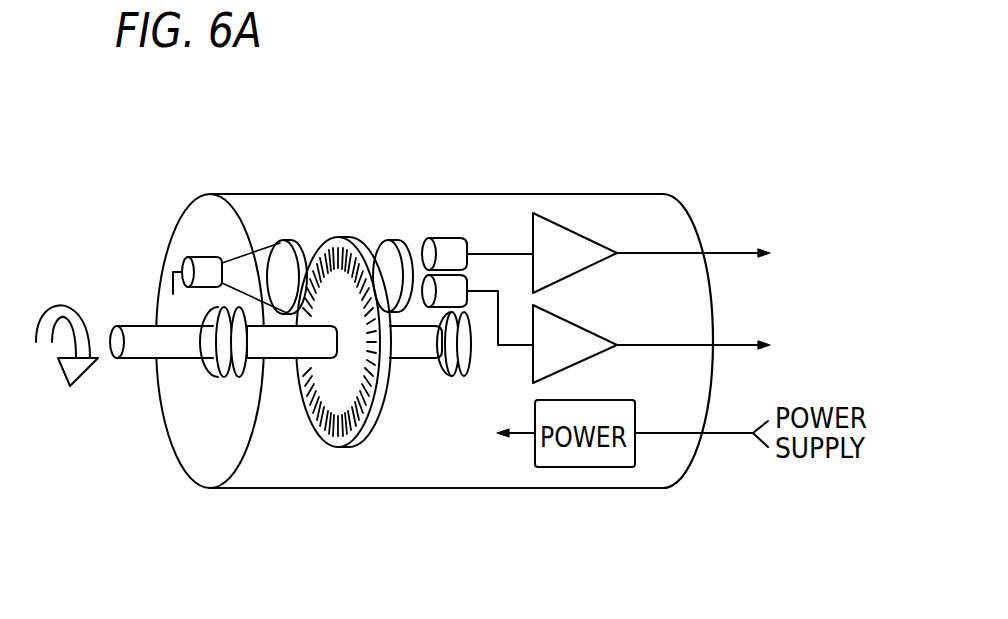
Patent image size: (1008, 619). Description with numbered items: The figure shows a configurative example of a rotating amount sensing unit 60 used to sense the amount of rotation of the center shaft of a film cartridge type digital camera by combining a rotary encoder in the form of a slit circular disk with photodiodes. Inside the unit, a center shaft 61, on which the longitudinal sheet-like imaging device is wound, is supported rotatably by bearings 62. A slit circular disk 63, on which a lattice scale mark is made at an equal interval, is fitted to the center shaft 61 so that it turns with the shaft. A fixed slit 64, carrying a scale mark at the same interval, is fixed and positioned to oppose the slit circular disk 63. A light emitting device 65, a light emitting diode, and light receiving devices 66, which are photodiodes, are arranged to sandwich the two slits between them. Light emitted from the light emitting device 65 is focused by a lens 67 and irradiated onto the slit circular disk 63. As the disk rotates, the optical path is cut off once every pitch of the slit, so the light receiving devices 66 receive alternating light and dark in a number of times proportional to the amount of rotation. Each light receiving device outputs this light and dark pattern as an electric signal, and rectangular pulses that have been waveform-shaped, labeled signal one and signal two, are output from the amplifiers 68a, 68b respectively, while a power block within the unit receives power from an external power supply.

The rotating amount sensing unit 60 is at (641, 188).
The center shaft 61 is at (137, 350).
The bearings 62 is at (210, 378).
The slit circular disk 63 is at (356, 447).
The fixed slit 64 is at (398, 240).
The light emitting device 65 is at (190, 257).
The light receiving devices 66 is at (468, 275).
The lens 67 is at (266, 242).
The amplifier 68a is at (557, 232).
The amplifier 68b is at (573, 322).